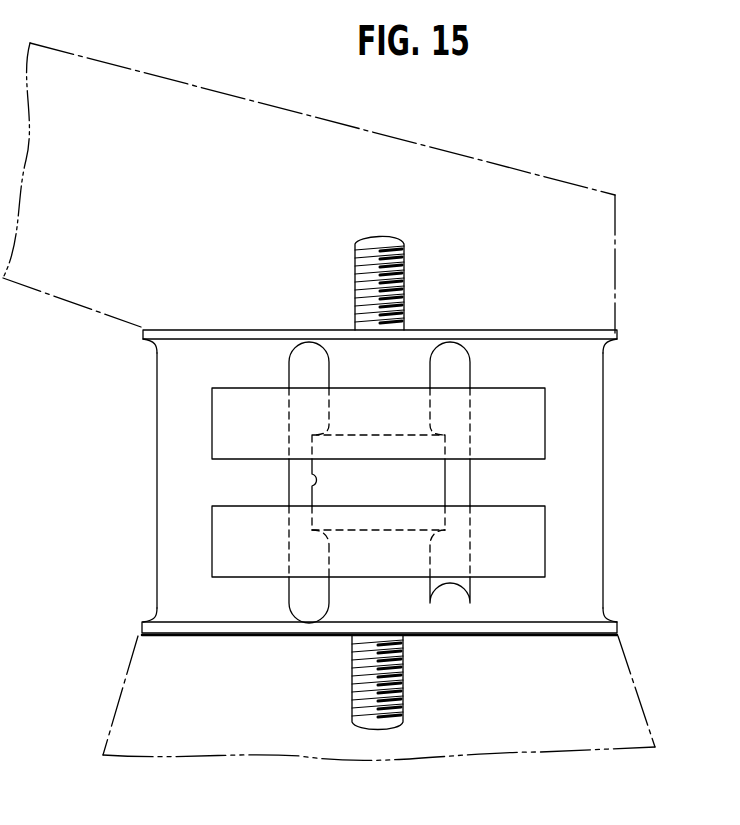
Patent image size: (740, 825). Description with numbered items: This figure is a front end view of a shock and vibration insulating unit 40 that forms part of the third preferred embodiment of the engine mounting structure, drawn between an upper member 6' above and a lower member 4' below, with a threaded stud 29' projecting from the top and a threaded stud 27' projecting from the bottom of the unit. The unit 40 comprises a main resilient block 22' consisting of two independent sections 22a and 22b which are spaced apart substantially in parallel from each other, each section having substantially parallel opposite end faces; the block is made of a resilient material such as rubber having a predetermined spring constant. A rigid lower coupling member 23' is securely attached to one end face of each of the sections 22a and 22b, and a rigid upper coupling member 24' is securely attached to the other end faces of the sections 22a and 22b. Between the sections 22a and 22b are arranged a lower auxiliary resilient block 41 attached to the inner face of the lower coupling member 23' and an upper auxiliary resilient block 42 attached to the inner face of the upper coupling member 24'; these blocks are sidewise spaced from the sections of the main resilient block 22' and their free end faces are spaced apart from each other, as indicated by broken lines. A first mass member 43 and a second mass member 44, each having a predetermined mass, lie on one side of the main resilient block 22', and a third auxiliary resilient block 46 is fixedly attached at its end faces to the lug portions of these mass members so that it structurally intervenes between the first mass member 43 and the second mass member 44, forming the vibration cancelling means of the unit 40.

The upper support member 6' is at (215, 185).
The shock and vibration insulating unit 40 is at (494, 147).
The upper threaded stud 29' is at (408, 283).
The upper coupling member 24' is at (380, 314).
The upper auxiliary resilient block 42 is at (316, 348).
The main resilient block 22' is at (404, 480).
The second mass member 44 is at (545, 428).
The section of main resilient block 22b is at (156, 476).
The third auxiliary resilient block 46 is at (318, 481).
The section of main resilient block 22a is at (604, 488).
The first mass member 43 is at (545, 546).
The lower auxiliary resilient block 41 is at (432, 608).
The lower support member 4' is at (370, 698).
The lower threaded stud 27' is at (355, 683).
The lower coupling member 23' is at (379, 653).